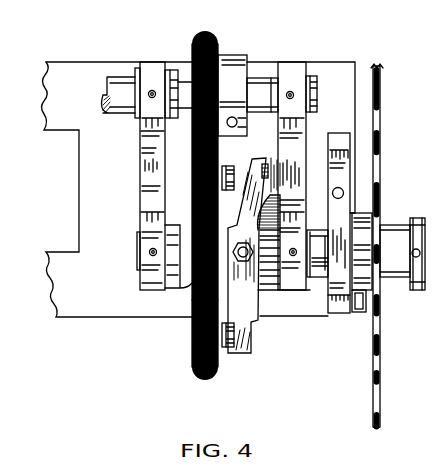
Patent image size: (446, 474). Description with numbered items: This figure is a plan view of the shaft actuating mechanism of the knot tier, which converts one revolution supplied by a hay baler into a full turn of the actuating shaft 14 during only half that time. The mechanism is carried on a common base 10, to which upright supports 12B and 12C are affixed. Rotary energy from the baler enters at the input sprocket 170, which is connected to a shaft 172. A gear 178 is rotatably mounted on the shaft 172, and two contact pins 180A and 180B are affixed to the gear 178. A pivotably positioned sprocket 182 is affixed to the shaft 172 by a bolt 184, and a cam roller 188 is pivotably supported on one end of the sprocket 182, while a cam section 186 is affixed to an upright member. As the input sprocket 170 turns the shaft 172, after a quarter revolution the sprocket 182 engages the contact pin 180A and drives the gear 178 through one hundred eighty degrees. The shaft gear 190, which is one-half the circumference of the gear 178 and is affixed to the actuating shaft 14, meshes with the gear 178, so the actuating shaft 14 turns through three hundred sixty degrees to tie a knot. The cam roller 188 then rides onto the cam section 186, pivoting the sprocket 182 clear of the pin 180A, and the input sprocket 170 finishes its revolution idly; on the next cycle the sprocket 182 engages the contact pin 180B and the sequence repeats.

The base 10 is at (102, 308).
The actuating shaft 14 is at (122, 92).
The upright support 12B is at (164, 46).
The upright support 12C is at (289, 72).
The shaft gear 190 is at (203, 62).
The gear 178 is at (207, 348).
The contact pin 180A is at (227, 167).
The contact pin 180B is at (224, 346).
The pivotably positioned sprocket 182 is at (248, 298).
The bolt 184 is at (243, 253).
The cam section 186 is at (268, 212).
The cam roller 188 is at (265, 175).
The shaft 172 is at (323, 270).
The input sprocket 170 is at (377, 193).